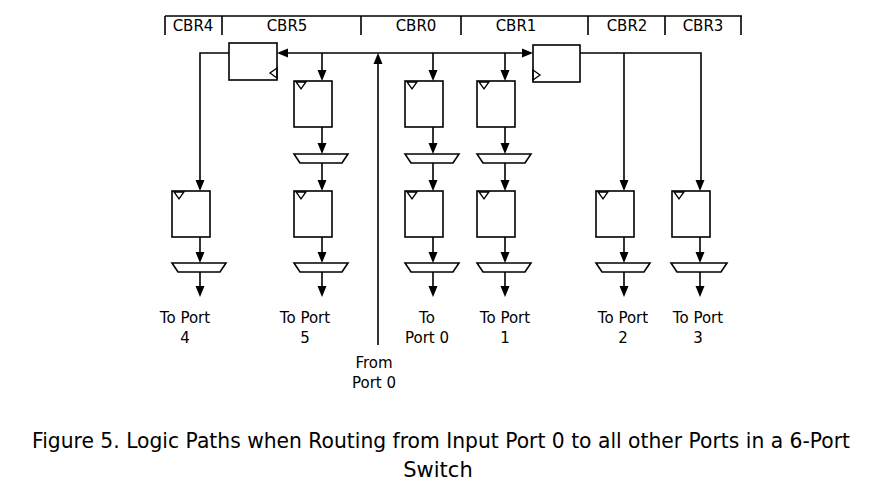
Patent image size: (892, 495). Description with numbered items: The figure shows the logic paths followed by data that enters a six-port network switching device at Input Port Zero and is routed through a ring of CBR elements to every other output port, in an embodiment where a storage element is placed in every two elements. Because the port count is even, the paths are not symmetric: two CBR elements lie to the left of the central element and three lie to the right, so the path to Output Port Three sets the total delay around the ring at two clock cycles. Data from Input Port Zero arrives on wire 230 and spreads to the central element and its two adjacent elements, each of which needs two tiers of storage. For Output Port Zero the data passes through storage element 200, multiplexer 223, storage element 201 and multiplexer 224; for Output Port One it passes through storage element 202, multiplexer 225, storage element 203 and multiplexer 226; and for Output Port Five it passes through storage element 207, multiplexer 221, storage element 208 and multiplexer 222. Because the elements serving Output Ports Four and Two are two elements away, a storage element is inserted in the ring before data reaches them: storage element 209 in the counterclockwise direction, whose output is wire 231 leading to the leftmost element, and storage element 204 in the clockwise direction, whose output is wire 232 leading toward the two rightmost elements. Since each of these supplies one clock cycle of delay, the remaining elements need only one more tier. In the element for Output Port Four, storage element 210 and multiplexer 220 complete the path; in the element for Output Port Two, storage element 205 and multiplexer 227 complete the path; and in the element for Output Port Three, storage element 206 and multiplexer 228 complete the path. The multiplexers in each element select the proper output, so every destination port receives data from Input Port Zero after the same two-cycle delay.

The storage element 200 is at (438, 90).
The storage element 201 is at (437, 200).
The storage element 202 is at (513, 90).
The storage element 203 is at (515, 200).
The storage element 204 is at (563, 73).
The storage element 205 is at (630, 208).
The storage element 206 is at (710, 208).
The storage element 207 is at (328, 90).
The storage element 208 is at (329, 200).
The storage element 209 is at (253, 72).
The storage element 210 is at (171, 208).
The multiplexer 220 is at (177, 267).
The multiplexer 221 is at (329, 157).
The multiplexer 222 is at (330, 267).
The multiplexer 223 is at (437, 157).
The multiplexer 224 is at (437, 267).
The multiplexer 225 is at (515, 156).
The multiplexer 226 is at (518, 267).
The multiplexer 227 is at (629, 267).
The multiplexer 228 is at (712, 267).
The wire 230 is at (405, 190).
The wire 231 is at (199, 116).
The wire 232 is at (663, 116).